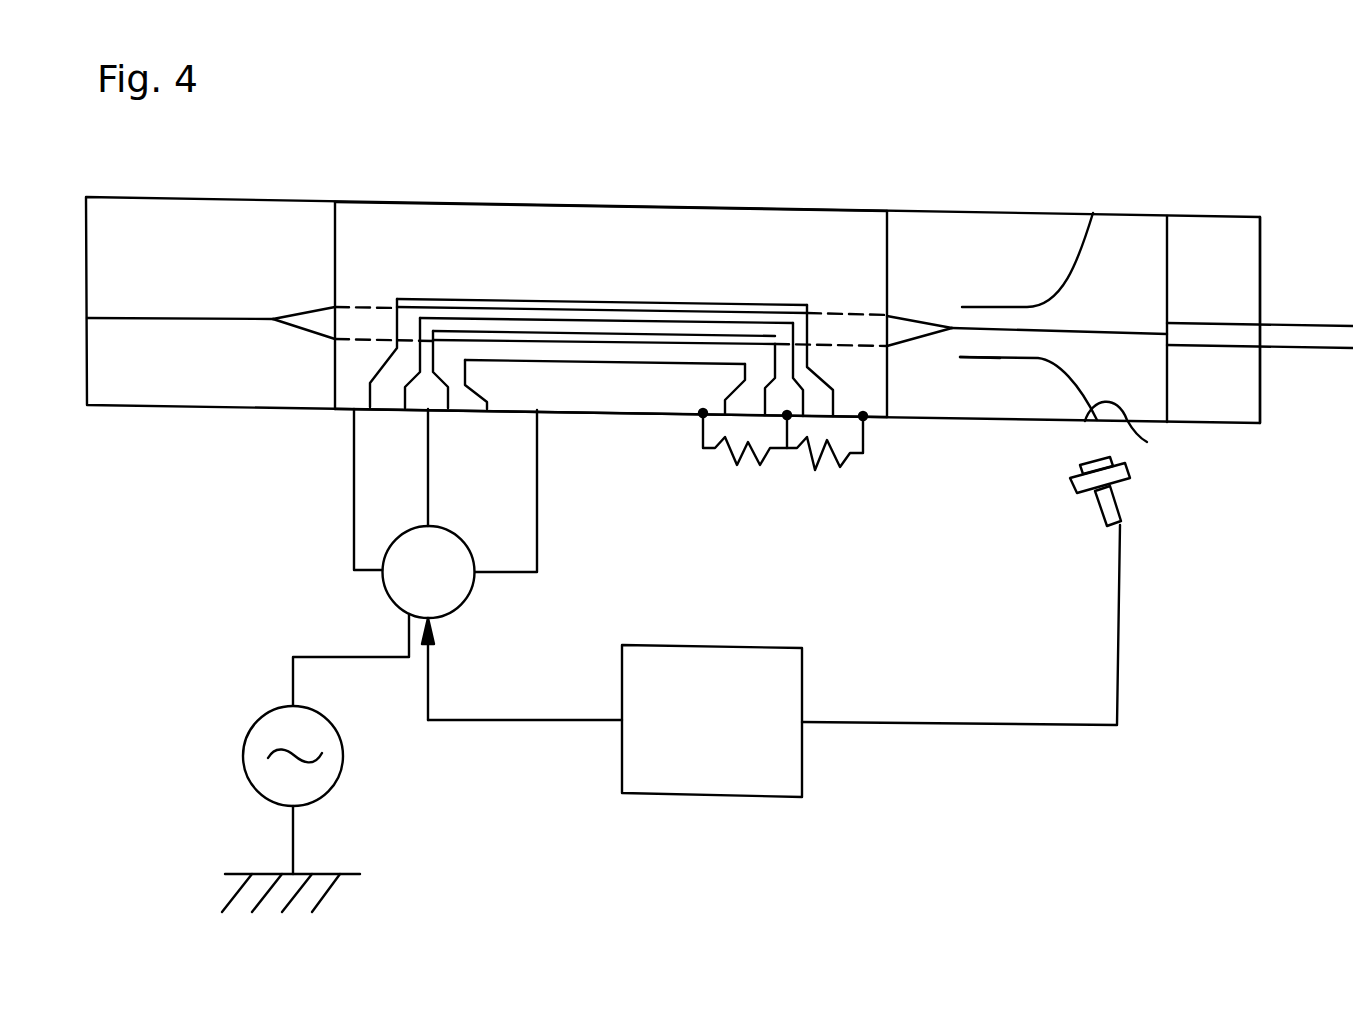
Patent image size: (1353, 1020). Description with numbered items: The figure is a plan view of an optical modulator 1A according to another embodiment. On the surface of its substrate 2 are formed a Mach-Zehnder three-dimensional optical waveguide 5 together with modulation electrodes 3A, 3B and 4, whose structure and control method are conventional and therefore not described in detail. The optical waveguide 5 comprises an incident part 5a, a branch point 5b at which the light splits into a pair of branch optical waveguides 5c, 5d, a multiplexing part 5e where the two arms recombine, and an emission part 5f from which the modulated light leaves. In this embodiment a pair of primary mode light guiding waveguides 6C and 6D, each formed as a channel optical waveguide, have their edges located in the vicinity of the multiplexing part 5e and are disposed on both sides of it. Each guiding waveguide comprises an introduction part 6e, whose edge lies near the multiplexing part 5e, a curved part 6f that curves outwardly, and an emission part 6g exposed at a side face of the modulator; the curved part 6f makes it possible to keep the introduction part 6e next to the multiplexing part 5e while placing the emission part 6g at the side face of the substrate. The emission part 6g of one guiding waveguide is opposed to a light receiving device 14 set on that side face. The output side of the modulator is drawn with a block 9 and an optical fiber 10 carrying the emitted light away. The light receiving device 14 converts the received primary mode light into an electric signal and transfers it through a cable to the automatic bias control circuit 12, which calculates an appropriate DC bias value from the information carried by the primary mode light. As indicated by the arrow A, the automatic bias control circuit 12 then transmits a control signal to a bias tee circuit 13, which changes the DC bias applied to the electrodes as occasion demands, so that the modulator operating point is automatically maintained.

The optical modulator 1A is at (1024, 209).
The substrate 2 is at (702, 222).
The modulation electrode 3A is at (630, 402).
The modulation electrode 3B is at (575, 217).
The modulation electrode 4 is at (580, 330).
The Mach-Zehnder three-dimensional optical waveguide 5 is at (278, 296).
The incident part 5a is at (183, 317).
The branch point 5b is at (273, 321).
The branch optical waveguide 5c is at (556, 343).
The branch optical waveguide 5d is at (499, 312).
The multiplexing part 5e is at (950, 328).
The emission part 5f is at (1105, 335).
The primary mode light guiding waveguide 6C is at (1042, 381).
The primary mode light guiding waveguide 6D is at (995, 284).
The introduction part 6e is at (983, 362).
The curved part 6f is at (1057, 362).
The emission part 6g is at (1143, 443).
The fiber holding block 9 is at (1203, 227).
The optical fiber 10 is at (1227, 328).
The automatic bias control circuit 12 is at (712, 721).
The bias tee circuit 13 is at (473, 595).
The light receiving device 14 is at (1113, 500).
The arrow A is at (528, 720).